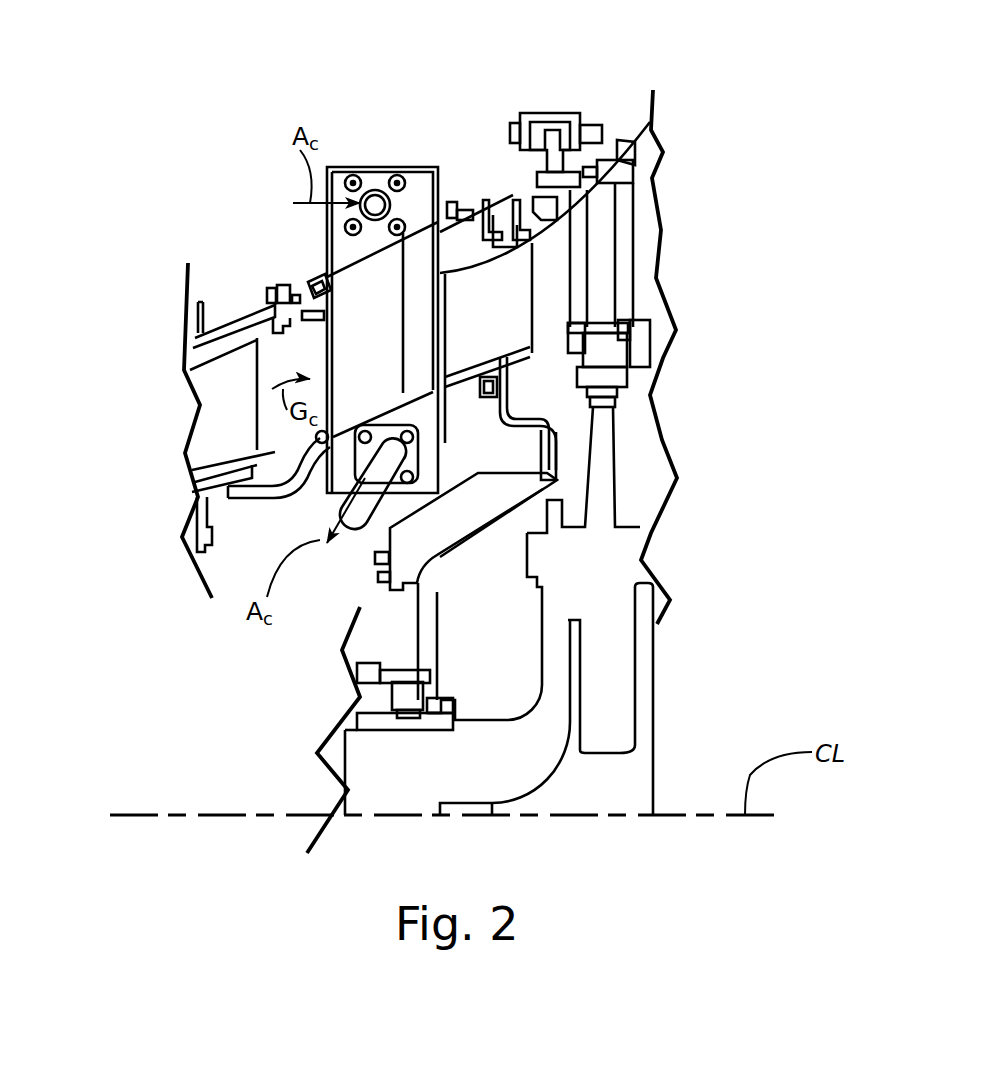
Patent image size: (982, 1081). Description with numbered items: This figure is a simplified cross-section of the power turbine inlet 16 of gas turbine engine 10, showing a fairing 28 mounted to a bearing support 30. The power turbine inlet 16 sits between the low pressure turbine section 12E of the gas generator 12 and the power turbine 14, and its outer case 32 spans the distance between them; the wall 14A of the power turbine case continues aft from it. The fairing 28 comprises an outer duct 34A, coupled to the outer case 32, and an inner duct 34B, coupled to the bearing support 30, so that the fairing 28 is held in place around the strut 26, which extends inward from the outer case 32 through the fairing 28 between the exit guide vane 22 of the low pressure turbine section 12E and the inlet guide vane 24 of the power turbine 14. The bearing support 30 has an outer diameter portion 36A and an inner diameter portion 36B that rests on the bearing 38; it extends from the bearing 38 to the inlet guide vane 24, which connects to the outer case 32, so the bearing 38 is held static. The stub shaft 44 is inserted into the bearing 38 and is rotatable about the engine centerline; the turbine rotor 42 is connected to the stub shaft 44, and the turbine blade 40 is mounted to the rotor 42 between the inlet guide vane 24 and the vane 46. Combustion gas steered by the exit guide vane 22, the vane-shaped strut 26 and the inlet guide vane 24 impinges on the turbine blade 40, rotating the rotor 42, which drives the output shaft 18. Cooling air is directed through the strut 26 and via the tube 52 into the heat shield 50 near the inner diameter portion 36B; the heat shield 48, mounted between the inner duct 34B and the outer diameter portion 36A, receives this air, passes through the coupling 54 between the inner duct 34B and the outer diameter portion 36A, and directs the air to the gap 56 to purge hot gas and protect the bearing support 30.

The gas turbine engine 10 is at (143, 127).
The gas generator 12 is at (183, 347).
The low pressure turbine section 12E is at (228, 323).
The power turbine inlet 16 is at (302, 261).
The exit guide vane 22 is at (240, 420).
The strut 26 is at (405, 248).
The fairing 28 is at (462, 366).
The outer duct 34A is at (498, 250).
The inner duct 34B is at (487, 395).
The power turbine 14 is at (690, 135).
The case wall 14A is at (617, 137).
The outer case 32 is at (502, 193).
The inlet guide vane 24 is at (563, 284).
The vane 46 is at (647, 218).
The turbine blade 40 is at (603, 292).
The gap 56 is at (647, 352).
The coupling 54 is at (483, 372).
The outer diameter portion 36A is at (524, 418).
The heat shield 48 is at (522, 432).
The bearing support 30 is at (558, 447).
The inner diameter portion 36B is at (465, 540).
The turbine rotor 42 is at (614, 574).
The output shaft 18 is at (640, 572).
The bearing 38 is at (403, 695).
The stub shaft 44 is at (436, 768).
The heat shield 50 is at (375, 530).
The tube 52 is at (320, 512).